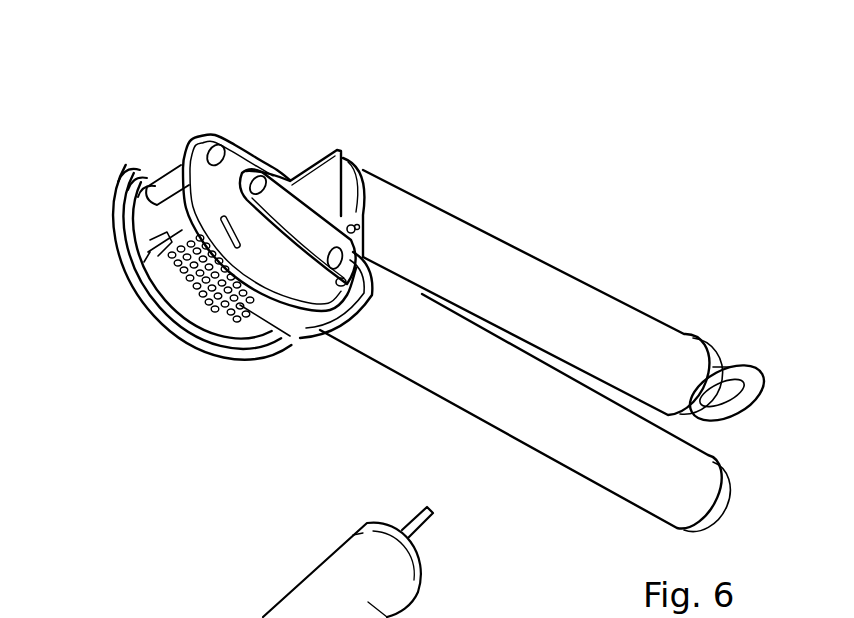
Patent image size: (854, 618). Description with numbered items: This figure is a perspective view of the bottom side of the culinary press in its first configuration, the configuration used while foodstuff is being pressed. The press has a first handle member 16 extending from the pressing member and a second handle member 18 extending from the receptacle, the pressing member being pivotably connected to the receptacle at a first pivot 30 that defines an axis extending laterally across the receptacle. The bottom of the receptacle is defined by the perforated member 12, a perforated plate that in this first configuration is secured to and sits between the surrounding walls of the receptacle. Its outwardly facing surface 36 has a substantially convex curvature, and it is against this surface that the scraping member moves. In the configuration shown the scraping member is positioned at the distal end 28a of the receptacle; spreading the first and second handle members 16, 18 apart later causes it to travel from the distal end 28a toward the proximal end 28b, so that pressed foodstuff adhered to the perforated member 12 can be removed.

The perforated member 12 is at (175, 233).
The first handle member 16 is at (567, 308).
The second handle member 18 is at (575, 447).
The distal end 28a is at (327, 388).
The proximal end 28b is at (217, 90).
The first pivot 30 is at (213, 157).
The outwardly facing surface 36 is at (207, 303).